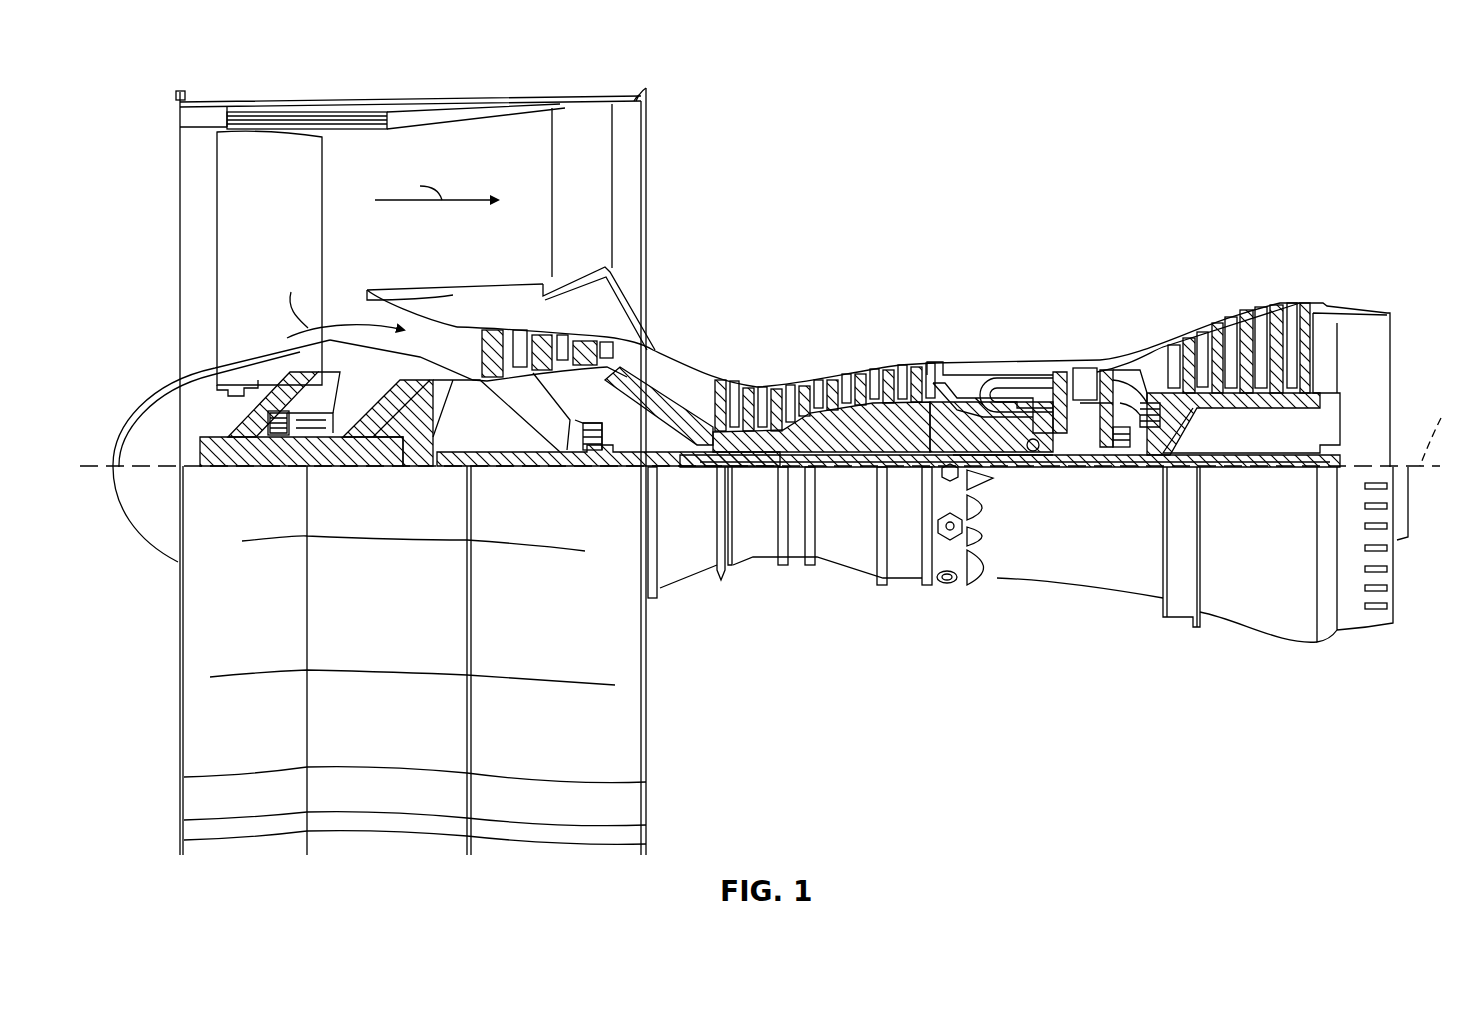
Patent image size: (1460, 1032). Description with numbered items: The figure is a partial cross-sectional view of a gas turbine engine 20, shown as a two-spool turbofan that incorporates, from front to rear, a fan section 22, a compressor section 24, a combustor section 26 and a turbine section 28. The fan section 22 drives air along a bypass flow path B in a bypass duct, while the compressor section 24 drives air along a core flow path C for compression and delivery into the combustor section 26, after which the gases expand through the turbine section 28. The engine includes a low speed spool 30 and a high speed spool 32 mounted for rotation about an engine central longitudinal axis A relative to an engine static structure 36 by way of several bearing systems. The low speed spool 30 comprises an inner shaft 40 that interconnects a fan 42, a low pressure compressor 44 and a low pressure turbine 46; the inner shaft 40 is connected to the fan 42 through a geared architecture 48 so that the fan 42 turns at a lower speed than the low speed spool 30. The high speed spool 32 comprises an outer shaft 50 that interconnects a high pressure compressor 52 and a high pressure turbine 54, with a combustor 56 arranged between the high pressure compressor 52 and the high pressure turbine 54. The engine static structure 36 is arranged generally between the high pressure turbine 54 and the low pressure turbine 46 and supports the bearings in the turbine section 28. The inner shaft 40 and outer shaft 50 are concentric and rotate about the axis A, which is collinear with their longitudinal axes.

The gas turbine engine 20 is at (1152, 148).
The fan section 22 is at (274, 86).
The compressor section 24 is at (840, 292).
The combustor section 26 is at (1010, 292).
The turbine section 28 is at (1196, 262).
The low speed spool 30 is at (866, 478).
The high speed spool 32 is at (917, 425).
The engine static structure 36 is at (919, 586).
The inner shaft 40 is at (667, 470).
The fan 42 is at (296, 230).
The low pressure compressor 44 is at (563, 333).
The low pressure turbine 46 is at (1244, 328).
The geared architecture 48 is at (410, 438).
The outer shaft 50 is at (1040, 462).
The high pressure compressor 52 is at (827, 437).
The high pressure turbine 54 is at (1082, 360).
The combustor 56 is at (993, 388).